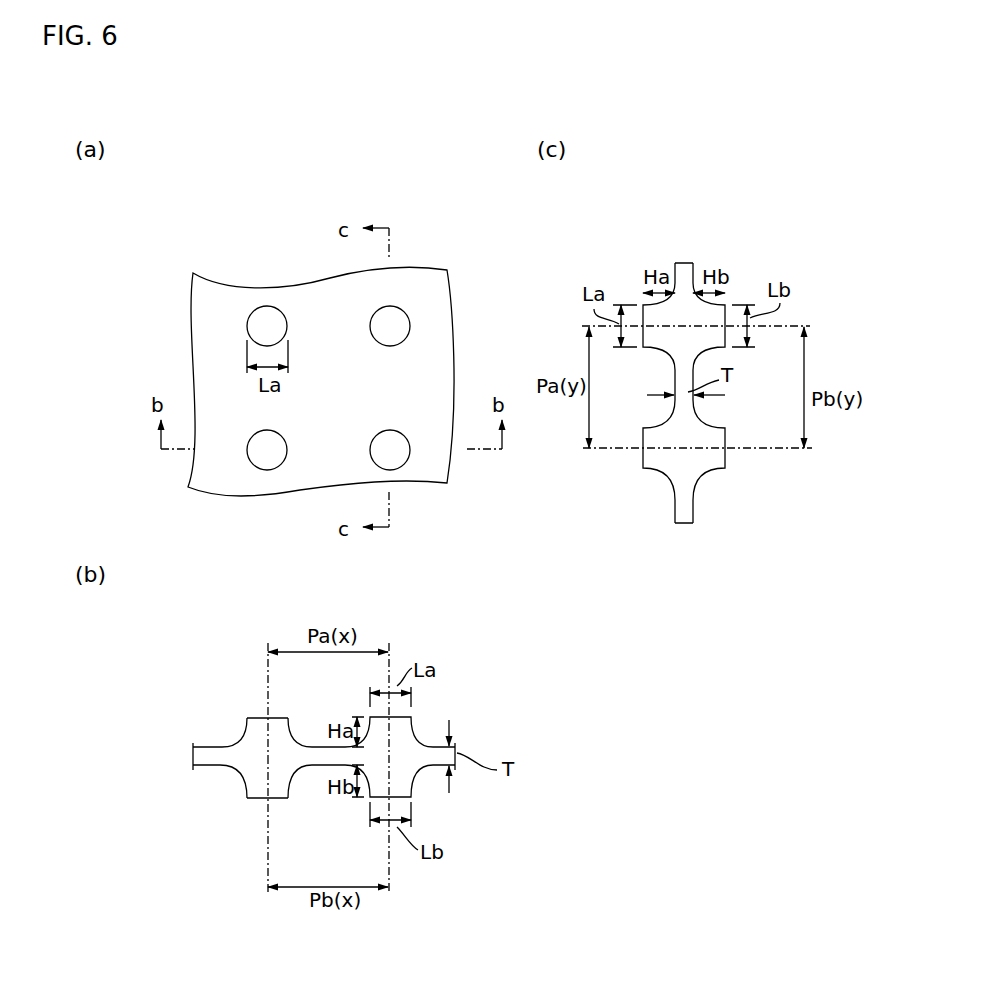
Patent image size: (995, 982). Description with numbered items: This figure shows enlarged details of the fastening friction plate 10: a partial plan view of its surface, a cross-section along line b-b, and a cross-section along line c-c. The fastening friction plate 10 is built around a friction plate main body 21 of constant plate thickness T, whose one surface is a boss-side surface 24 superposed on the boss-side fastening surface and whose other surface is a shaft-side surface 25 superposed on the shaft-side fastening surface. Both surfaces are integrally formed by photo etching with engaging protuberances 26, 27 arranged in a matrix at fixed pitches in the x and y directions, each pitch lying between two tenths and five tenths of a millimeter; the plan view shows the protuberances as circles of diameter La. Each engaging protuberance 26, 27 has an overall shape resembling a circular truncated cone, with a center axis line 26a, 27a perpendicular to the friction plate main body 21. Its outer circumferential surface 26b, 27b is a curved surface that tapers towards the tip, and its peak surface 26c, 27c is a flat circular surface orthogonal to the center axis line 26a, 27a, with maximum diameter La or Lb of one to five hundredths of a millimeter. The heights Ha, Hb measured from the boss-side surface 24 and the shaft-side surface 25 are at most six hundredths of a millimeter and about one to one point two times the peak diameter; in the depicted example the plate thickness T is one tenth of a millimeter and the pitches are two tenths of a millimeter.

The fastening friction plate 10 is at (141, 300).
The friction plate main body 21 is at (188, 354).
The boss-side surface 24 is at (224, 318).
The shaft-side surface 25 is at (697, 510).
The engaging protuberance 26 is at (267, 315).
The engaging protuberance 27 is at (715, 460).
The center axis line 26a is at (265, 680).
The outer circumferential surface 26b is at (240, 732).
The peak surface 26c is at (275, 717).
The center axis line 27a is at (265, 827).
The outer circumferential surface 27b is at (238, 777).
The peak surface 27c is at (277, 799).